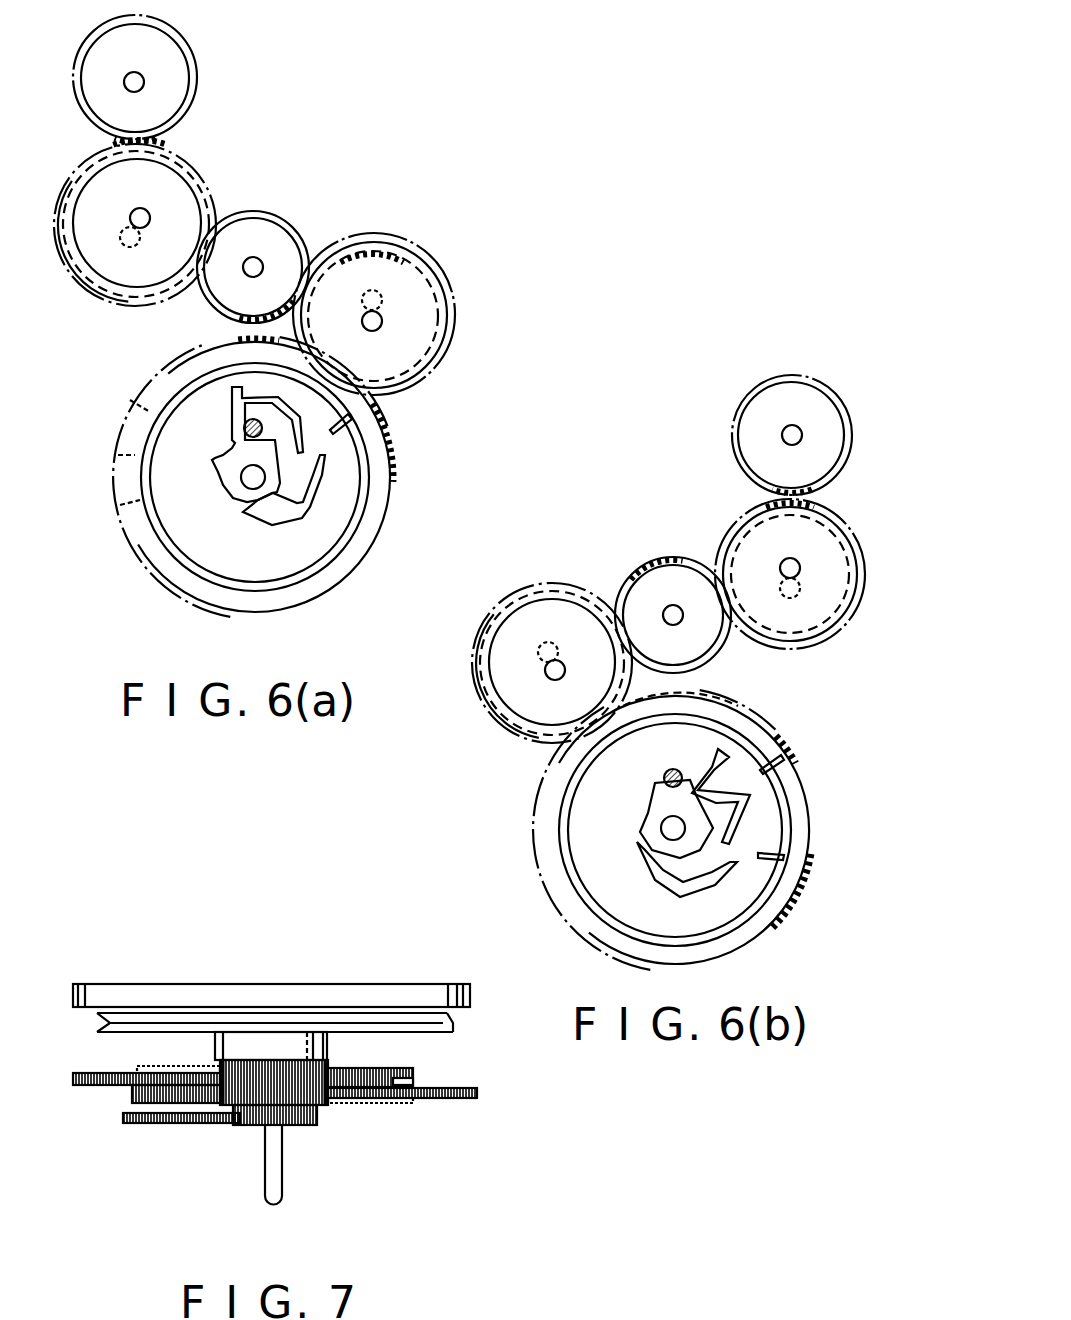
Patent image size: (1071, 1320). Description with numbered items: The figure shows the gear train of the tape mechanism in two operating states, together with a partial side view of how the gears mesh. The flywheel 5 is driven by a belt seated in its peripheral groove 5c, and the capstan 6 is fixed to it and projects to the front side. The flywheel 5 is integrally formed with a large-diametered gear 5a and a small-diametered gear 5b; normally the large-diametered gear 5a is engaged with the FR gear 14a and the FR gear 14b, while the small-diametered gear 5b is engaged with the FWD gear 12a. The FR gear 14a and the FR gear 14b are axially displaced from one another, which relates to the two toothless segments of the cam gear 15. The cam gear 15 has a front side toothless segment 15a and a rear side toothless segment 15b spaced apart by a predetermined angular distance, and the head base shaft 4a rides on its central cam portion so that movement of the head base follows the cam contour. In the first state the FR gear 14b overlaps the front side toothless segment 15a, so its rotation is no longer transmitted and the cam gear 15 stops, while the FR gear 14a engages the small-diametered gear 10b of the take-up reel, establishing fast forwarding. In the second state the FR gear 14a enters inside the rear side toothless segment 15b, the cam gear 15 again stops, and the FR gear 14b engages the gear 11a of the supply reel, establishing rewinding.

In FIG. 6A, the small-diametered gear 10b is at (185, 78).
In FIG. 6B, the gear 11a is at (748, 428).
In FIG. 6A, the FR gear 14a is at (185, 170).
In FIG. 6B, the FR gear 14a is at (500, 690).
In FIG. 7, the FR gear 14a is at (107, 1087).
In FIG. 6A, the FR gear 14b is at (430, 352).
In FIG. 6B, the FR gear 14b is at (733, 500).
In FIG. 7, the FR gear 14b is at (457, 1097).
In FIG. 6A, the large-diametered gear 5a is at (283, 232).
In FIG. 6B, the large-diametered gear 5a is at (660, 575).
In FIG. 7, the large-diametered gear 5a is at (330, 1065).
In FIG. 7, the flywheel 5 is at (150, 997).
In FIG. 7, the small-diametered gear 5b is at (320, 1120).
In FIG. 7, the groove 5c is at (440, 1018).
In FIG. 7, the capstan 6 is at (285, 1180).
In FIG. 7, the FWD gear 12a is at (165, 1122).
In FIG. 6A, the cam gear 15 is at (162, 568).
In FIG. 6B, the cam gear 15 is at (548, 880).
In FIG. 7, the cam gear 15 is at (412, 1068).
In FIG. 6A, the front side toothless segment 15a is at (385, 419).
In FIG. 6B, the front side toothless segment 15a is at (795, 795).
In FIG. 7, the front side toothless segment 15a is at (410, 1082).
In FIG. 6A, the rear side toothless segment 15b is at (128, 432).
In FIG. 6B, the rear side toothless segment 15b is at (718, 702).
In FIG. 7, the rear side toothless segment 15b is at (140, 1067).
In FIG. 6A, the head base shaft 4a is at (250, 428).
In FIG. 6B, the head base shaft 4a is at (664, 777).